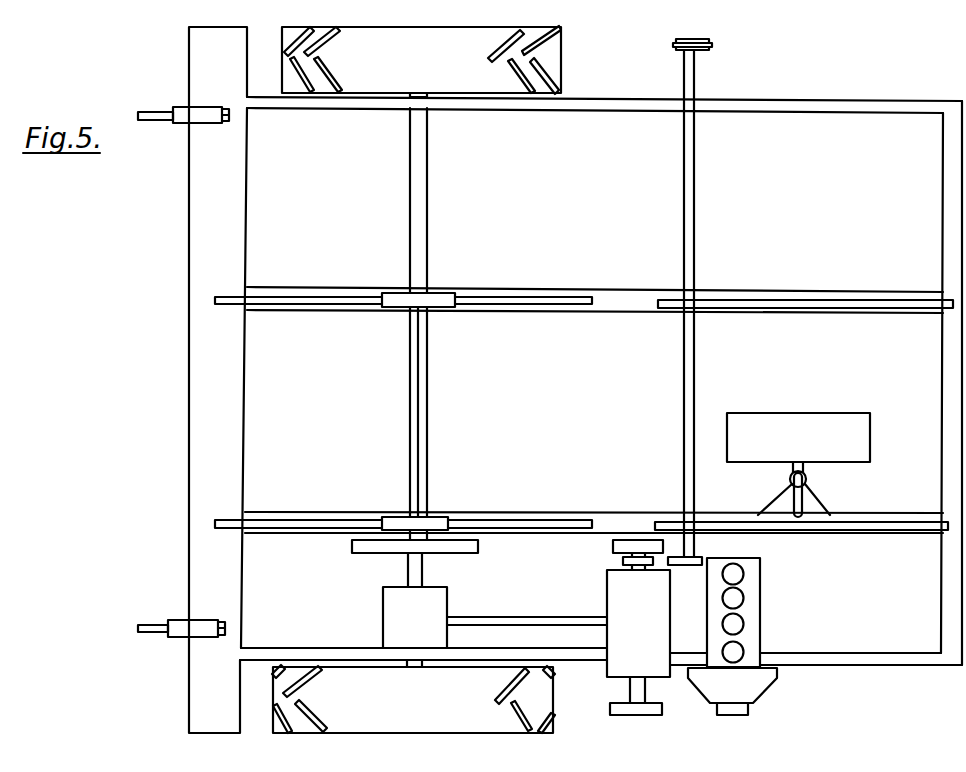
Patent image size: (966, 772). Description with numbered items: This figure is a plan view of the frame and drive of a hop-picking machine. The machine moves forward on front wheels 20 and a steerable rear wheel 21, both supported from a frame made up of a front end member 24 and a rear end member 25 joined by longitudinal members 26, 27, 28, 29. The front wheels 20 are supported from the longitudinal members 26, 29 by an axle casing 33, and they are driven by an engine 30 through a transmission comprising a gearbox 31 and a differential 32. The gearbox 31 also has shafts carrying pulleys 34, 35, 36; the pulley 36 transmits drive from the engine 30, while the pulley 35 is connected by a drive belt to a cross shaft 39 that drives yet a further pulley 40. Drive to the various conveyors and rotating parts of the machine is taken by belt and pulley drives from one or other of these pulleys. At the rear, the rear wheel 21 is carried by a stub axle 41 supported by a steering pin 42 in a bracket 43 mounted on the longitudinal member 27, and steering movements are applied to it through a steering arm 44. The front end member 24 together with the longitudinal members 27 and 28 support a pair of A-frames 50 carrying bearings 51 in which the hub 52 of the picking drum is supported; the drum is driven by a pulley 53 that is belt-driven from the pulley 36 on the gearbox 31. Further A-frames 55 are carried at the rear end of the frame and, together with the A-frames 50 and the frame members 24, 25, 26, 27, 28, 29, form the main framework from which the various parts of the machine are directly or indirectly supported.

The front wheels 20 is at (560, 66).
The steerable rear wheel 21 is at (836, 420).
The front end member 24 is at (236, 425).
The rear end member 25 is at (947, 378).
The longitudinal member 26 is at (858, 660).
The longitudinal member 27 is at (895, 512).
The longitudinal member 28 is at (862, 297).
The longitudinal member 29 is at (858, 108).
The engine 30 is at (762, 616).
The gearbox 31 is at (638, 636).
The differential 32 is at (438, 608).
The axle casing 33 is at (428, 215).
The pulley 34 is at (613, 548).
The pulley 35 is at (623, 562).
The pulley 36 is at (662, 710).
The cross shaft 39 is at (685, 358).
The pulley 40 is at (712, 42).
The stub axle 41 is at (790, 470).
The steering pin 42 is at (807, 477).
The bracket 43 is at (823, 503).
The steering arm 44 is at (805, 518).
The A-frames 50 is at (322, 297).
The bearings 51 is at (430, 295).
The hub 52 is at (416, 390).
The pulley 53 is at (478, 548).
The A-frames 55 is at (905, 300).